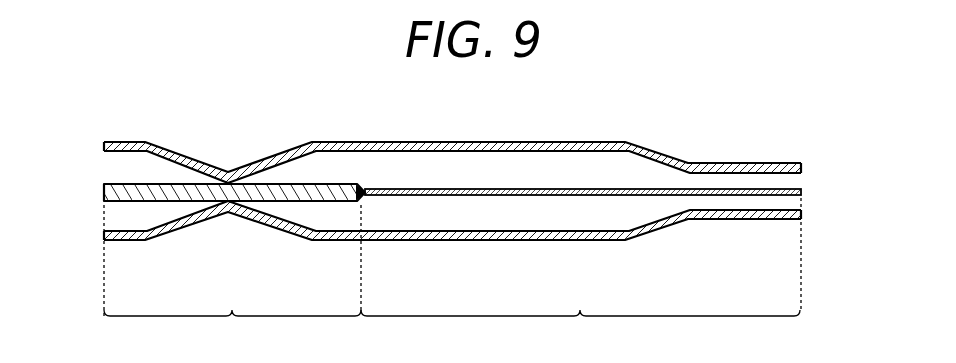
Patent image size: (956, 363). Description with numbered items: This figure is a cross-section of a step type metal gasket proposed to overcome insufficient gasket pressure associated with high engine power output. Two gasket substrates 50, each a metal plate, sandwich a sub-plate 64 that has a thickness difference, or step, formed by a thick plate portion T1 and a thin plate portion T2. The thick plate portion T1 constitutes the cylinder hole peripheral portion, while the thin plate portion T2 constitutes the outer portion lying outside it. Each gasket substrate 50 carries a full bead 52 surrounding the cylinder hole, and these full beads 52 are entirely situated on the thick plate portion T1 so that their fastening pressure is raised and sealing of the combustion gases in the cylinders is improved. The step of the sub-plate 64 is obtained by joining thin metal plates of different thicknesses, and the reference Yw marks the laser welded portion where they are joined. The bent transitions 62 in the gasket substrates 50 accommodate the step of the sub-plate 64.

The gasket substrate 50 is at (513, 141).
The full bead 52 is at (188, 155).
The bent portion (second bend) 62 is at (658, 151).
The sub-plate 64 is at (384, 187).
The laser welded portion Yw is at (362, 190).
The thick plate portion T1 is at (232, 278).
The thin plate portion T2 is at (581, 274).